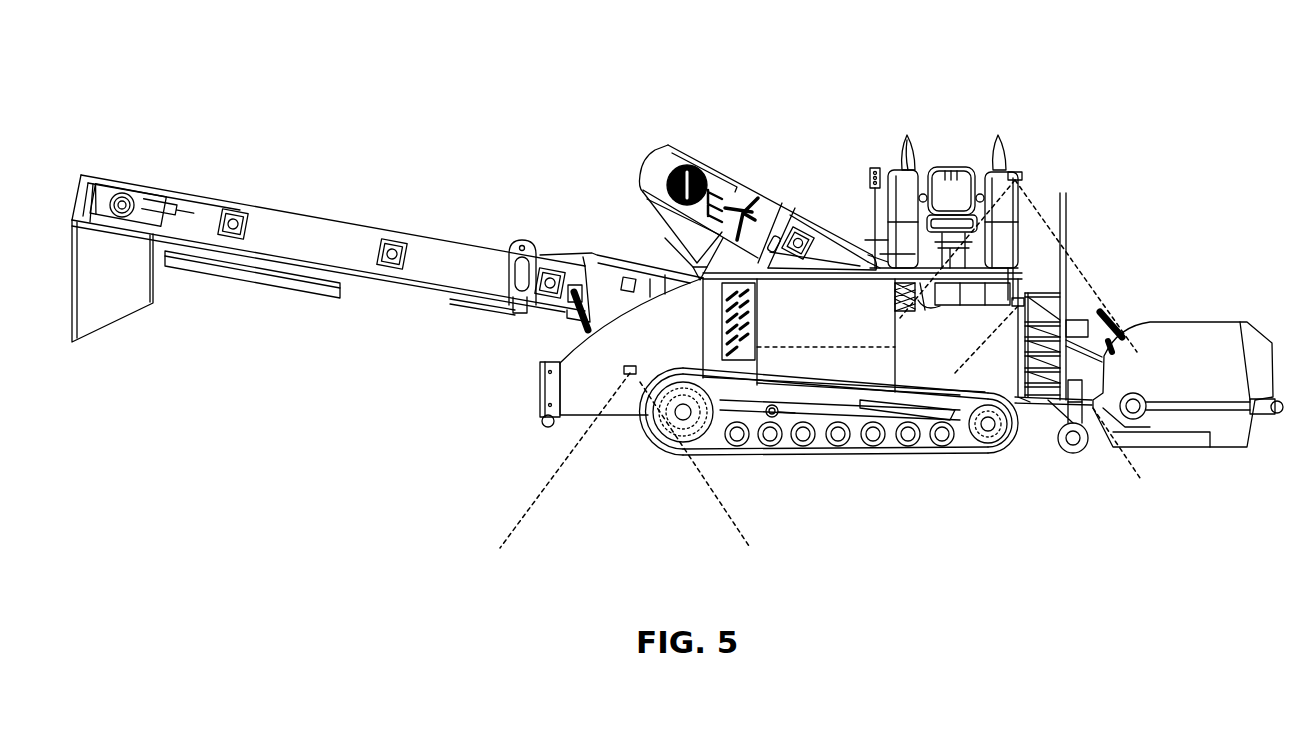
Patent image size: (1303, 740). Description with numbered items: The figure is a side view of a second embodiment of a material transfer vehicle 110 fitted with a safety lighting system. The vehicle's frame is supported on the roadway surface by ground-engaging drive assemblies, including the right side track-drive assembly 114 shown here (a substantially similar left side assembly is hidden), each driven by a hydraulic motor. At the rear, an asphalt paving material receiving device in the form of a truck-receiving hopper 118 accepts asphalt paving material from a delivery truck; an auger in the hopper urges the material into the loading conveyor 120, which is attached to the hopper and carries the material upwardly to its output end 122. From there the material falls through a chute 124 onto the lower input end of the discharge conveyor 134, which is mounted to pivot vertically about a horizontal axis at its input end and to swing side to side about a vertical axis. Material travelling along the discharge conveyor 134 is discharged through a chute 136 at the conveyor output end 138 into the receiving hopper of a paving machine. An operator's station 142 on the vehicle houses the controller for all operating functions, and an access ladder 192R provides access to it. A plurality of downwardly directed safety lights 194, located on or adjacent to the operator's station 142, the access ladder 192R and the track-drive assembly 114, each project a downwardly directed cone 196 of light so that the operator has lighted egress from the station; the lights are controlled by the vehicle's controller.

The material transfer vehicle 110 is at (1087, 79).
The right side track-drive assembly 114 is at (830, 461).
The truck-receiving hopper 118 is at (1200, 340).
The loading conveyor 120 is at (766, 214).
The output end 122 is at (685, 128).
The chute 124 is at (655, 228).
The discharge conveyor 134 is at (436, 258).
The chute 136 is at (158, 284).
The conveyor output end 138 is at (126, 174).
The operator's station 142 is at (948, 147).
The access ladder 192R is at (1073, 287).
The safety lights 194 is at (633, 362).
The cone of light 196 is at (1050, 197).